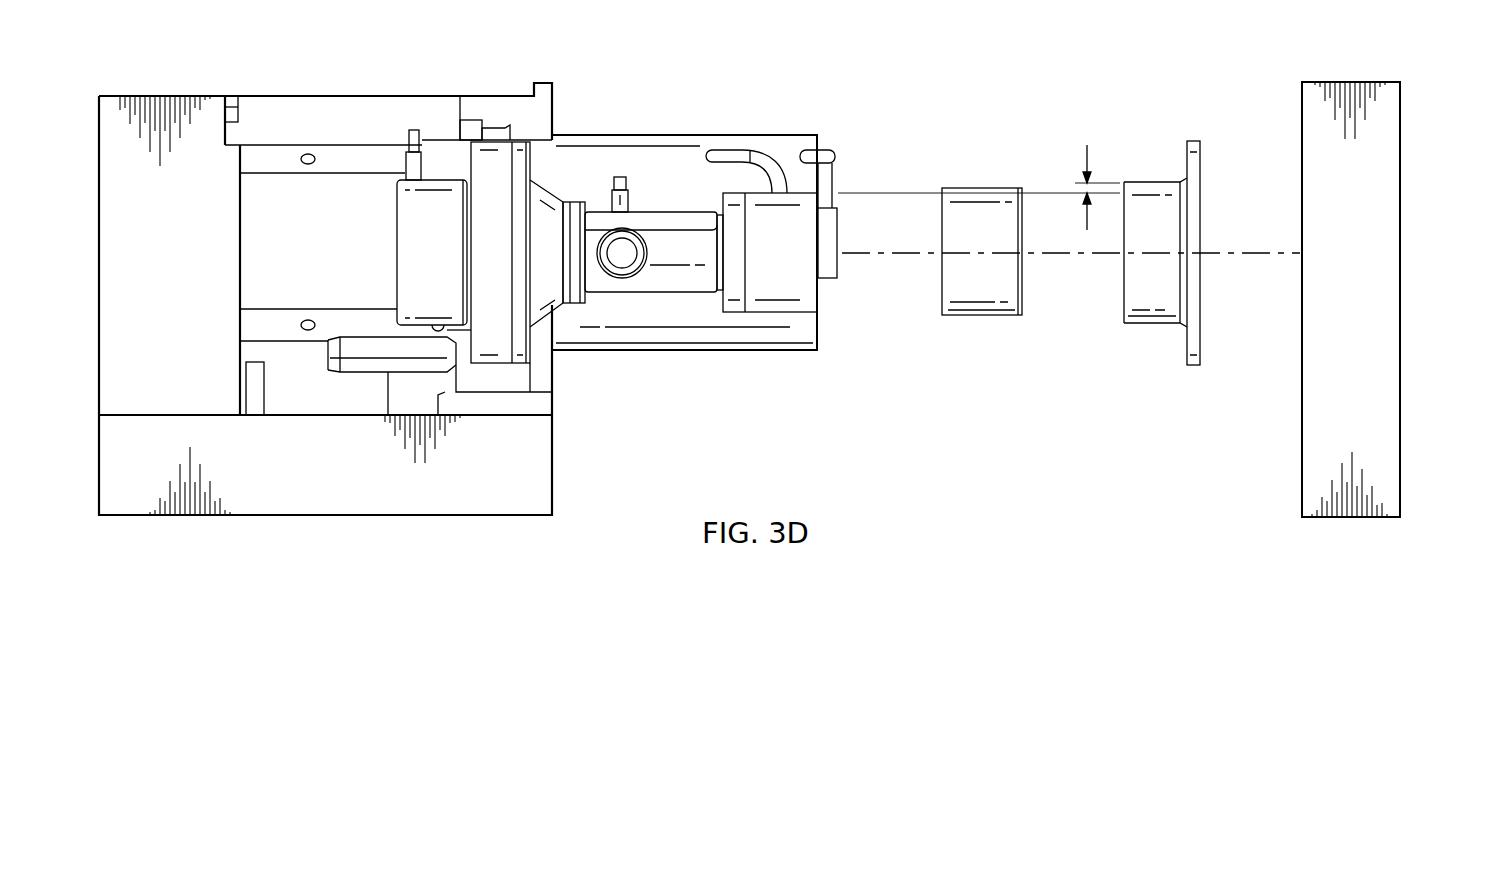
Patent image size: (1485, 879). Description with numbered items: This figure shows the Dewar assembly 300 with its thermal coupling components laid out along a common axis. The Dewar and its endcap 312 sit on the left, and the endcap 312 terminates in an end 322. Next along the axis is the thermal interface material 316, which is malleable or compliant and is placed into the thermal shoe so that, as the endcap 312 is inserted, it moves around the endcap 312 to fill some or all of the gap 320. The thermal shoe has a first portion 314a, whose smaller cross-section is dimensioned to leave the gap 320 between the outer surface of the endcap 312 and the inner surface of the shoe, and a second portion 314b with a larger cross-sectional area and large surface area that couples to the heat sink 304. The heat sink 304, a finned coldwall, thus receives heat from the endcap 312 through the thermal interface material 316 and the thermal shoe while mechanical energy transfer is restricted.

The Dewar assembly 300 is at (1133, 55).
The heat sink 304 is at (1402, 185).
The endcap 312 is at (803, 228).
The first portion of the thermal shoe 314a is at (1138, 182).
The second portion of the thermal shoe 314b is at (1193, 140).
The thermal interface material 316 is at (980, 317).
The gap 320 is at (1085, 152).
The end of the endcap 322 is at (818, 295).